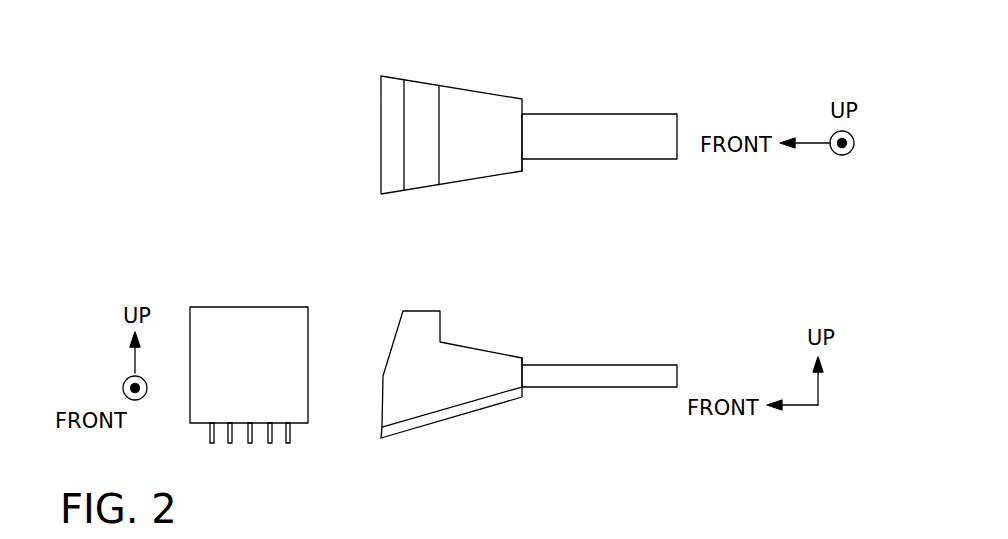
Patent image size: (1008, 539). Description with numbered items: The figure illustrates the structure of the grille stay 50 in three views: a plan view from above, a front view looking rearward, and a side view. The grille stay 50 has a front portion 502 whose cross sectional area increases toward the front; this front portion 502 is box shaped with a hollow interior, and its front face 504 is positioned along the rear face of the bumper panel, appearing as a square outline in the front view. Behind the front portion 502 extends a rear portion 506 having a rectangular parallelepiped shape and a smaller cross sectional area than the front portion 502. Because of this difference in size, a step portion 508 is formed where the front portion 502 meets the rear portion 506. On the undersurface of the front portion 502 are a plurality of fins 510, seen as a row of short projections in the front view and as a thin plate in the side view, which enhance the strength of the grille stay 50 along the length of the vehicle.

The grille stay 50 is at (297, 44).
The front portion 502 is at (475, 92).
The front face 504 is at (378, 143).
The rear portion 506 is at (615, 113).
The step portion 508 is at (527, 166).
The fins 510 is at (292, 440).